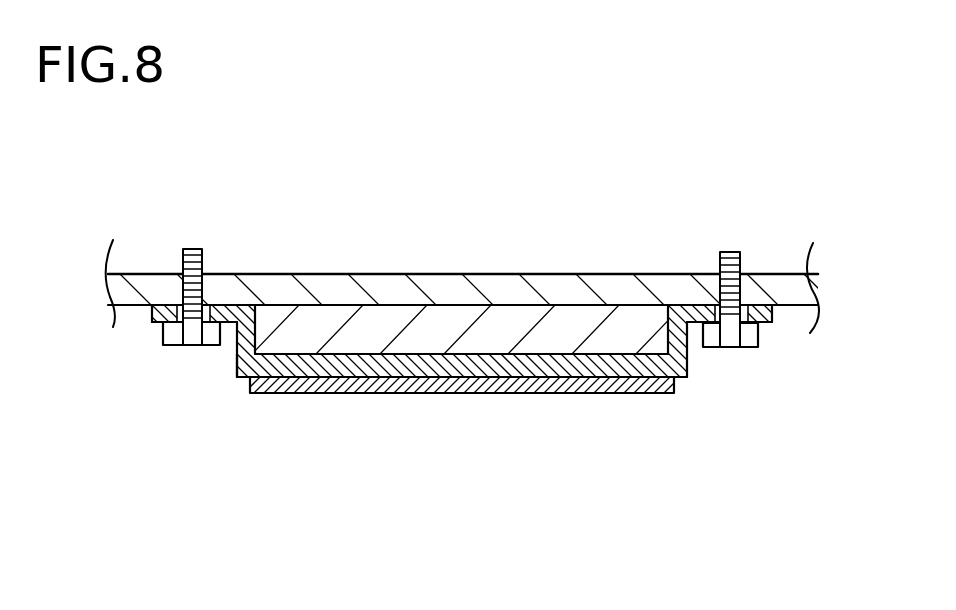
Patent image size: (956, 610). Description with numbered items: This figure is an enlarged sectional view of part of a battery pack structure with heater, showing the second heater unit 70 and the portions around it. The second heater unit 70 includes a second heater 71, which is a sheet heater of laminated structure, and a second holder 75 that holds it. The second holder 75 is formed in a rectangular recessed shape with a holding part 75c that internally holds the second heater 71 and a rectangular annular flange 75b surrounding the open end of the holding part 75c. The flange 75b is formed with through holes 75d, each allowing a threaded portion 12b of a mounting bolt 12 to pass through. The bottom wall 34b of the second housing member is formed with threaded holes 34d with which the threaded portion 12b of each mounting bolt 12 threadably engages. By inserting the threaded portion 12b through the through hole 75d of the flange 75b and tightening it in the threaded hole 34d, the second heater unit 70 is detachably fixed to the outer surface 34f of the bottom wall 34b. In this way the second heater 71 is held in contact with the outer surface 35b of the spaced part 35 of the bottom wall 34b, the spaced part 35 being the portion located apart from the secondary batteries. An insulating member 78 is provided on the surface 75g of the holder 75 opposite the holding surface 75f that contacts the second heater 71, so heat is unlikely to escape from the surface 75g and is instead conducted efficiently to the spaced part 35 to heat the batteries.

The mounting bolt 12 is at (211, 346).
The threaded portion 12b is at (193, 250).
The bottom wall 34b is at (128, 296).
The threaded hole 34d is at (196, 277).
The outer surface 34f is at (783, 307).
The spaced part 35 is at (512, 295).
The outer surface 35b is at (563, 308).
The second heater unit 70 is at (482, 414).
The second heater 71 is at (628, 330).
The second holder 75 is at (350, 360).
The flange 75b is at (163, 308).
The holding part 75c is at (288, 370).
The through hole 75d is at (172, 347).
The holding surface 75f is at (400, 340).
The surface 75g is at (419, 393).
The insulating member 78 is at (583, 378).